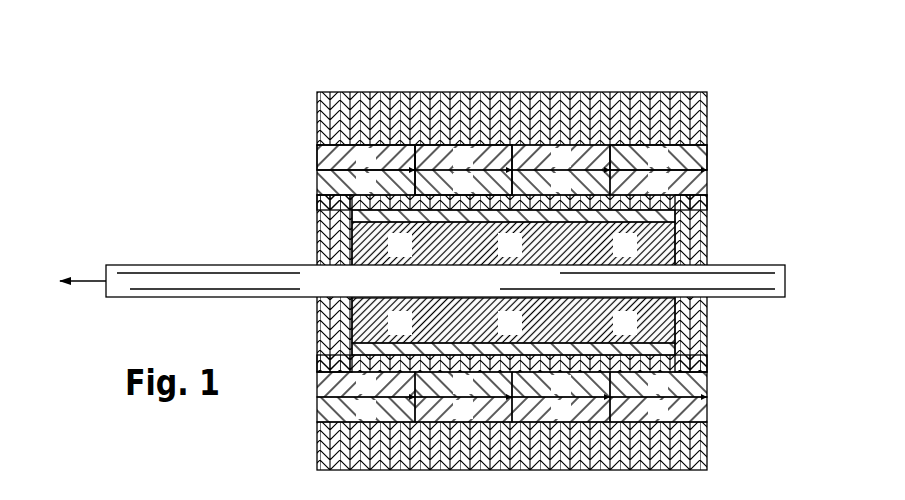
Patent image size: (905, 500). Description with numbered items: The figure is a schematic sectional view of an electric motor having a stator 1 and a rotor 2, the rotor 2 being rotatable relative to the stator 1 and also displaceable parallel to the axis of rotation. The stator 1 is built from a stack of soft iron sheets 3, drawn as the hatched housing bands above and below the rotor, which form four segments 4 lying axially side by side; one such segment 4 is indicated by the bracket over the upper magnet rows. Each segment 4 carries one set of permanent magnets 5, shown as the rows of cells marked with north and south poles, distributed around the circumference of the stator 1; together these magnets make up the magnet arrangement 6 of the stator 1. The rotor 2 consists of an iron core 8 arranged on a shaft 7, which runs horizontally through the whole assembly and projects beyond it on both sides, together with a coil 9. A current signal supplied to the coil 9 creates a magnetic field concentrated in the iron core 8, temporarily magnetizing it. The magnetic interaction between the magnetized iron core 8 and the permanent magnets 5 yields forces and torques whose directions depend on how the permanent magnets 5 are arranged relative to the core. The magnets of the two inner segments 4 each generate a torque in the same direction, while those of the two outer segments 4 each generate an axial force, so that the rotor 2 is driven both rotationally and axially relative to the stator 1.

The stator 1 is at (312, 120).
The rotor 2 is at (322, 234).
The soft iron sheets 3 is at (367, 148).
The segment 4 is at (414, 93).
The permanent magnets 5 is at (672, 158).
The magnet arrangement 6 is at (312, 168).
The shaft 7 is at (770, 283).
The iron core 8 is at (707, 213).
The coil 9 is at (707, 250).